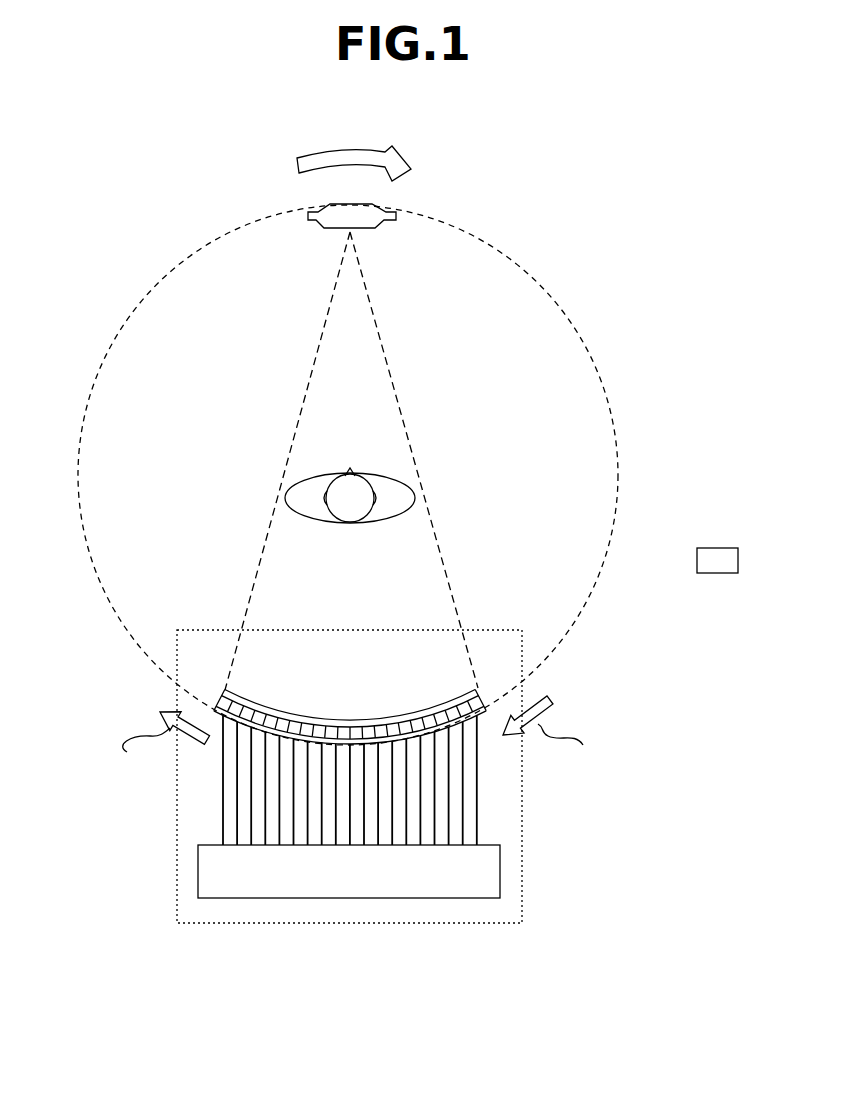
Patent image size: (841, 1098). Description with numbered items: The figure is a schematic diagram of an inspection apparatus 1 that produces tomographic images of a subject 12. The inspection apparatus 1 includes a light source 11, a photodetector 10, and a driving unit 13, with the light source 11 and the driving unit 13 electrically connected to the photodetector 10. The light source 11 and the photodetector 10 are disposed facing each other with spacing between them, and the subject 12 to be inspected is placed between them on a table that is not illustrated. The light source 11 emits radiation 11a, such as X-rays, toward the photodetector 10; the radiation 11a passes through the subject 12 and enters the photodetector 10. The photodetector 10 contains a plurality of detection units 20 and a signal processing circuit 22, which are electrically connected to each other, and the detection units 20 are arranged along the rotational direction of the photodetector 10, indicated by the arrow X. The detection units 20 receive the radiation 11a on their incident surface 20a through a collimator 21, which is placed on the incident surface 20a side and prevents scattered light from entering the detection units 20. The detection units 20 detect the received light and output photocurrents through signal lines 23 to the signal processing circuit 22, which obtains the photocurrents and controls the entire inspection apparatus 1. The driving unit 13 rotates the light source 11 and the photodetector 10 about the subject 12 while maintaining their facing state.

The inspection apparatus 1 is at (703, 152).
The photodetector 10 is at (528, 905).
The light source 11 is at (330, 206).
The radiation 11a is at (393, 376).
The subject 12 is at (395, 497).
The driving unit 13 is at (718, 573).
The detection units 20 is at (235, 748).
The incident surface 20a is at (232, 687).
The collimator 21 is at (470, 683).
The signal processing circuit 22 is at (478, 870).
The signal lines 23 is at (480, 790).